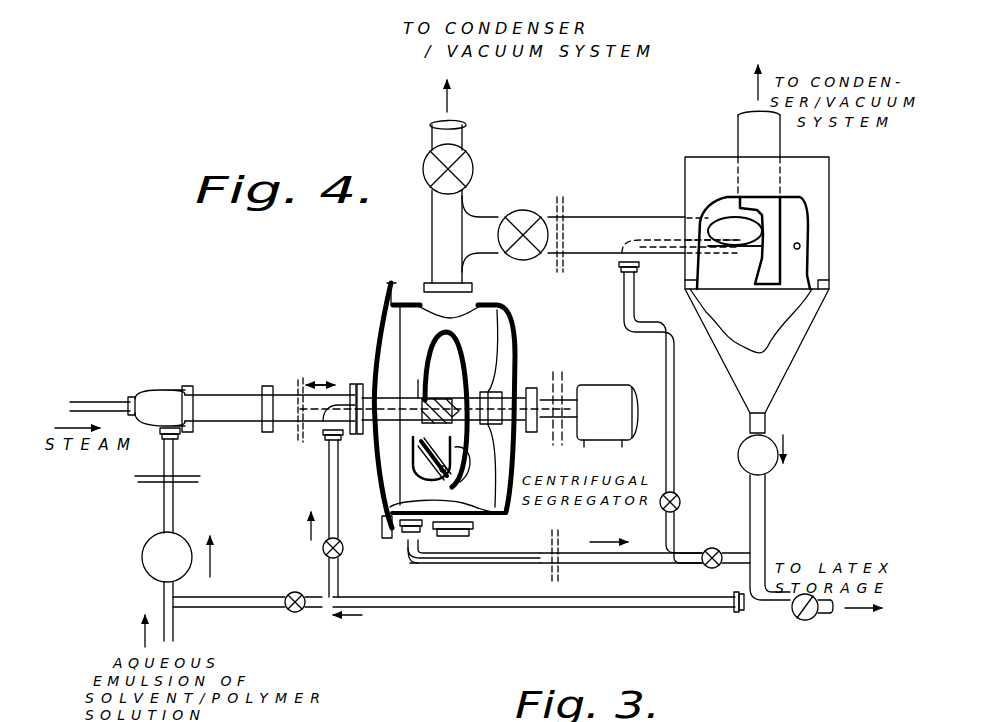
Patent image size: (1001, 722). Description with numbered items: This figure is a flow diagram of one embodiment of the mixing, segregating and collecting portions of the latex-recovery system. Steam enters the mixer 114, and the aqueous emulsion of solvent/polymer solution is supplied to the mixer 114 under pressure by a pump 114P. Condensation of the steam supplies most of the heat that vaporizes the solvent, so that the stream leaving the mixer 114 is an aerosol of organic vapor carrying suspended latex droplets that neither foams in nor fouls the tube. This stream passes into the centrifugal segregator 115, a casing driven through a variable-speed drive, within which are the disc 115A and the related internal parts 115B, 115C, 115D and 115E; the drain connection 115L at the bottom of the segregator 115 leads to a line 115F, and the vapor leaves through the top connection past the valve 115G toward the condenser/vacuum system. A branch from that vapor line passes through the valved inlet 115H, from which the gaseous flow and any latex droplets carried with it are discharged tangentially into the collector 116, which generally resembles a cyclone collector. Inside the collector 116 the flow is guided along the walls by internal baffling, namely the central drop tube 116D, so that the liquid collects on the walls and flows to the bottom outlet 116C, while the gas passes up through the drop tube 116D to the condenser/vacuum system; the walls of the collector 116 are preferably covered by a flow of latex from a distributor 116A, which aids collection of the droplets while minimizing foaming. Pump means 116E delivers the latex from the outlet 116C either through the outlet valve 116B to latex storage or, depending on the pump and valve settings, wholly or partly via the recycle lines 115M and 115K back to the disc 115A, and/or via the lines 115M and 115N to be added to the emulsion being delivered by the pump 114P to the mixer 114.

The mixer tube 114 is at (227, 397).
The pump 114P is at (142, 563).
The centrifugal segregator 115 is at (390, 336).
The disc 115A is at (440, 380).
The segregator rotor element 115B is at (445, 400).
The segregator rotor bowl 115C is at (445, 342).
The segregator housing top 115D is at (460, 356).
The segregator lower element 115E is at (432, 482).
The segregator drain line 115F is at (530, 560).
The vapor outlet valve 115G is at (458, 139).
The inlet 115H is at (620, 214).
The recycle line 115K is at (330, 468).
The segregator bottom drain nozzle 115L is at (452, 540).
The recycle line 115M is at (538, 607).
The recycle line 115N is at (242, 607).
The collector 116 is at (685, 186).
The distributor 116A is at (803, 245).
The outlet valve 116B is at (803, 620).
The bottom outlet 116C is at (768, 403).
The drop tube 116D is at (738, 139).
The pump means 116E is at (775, 470).